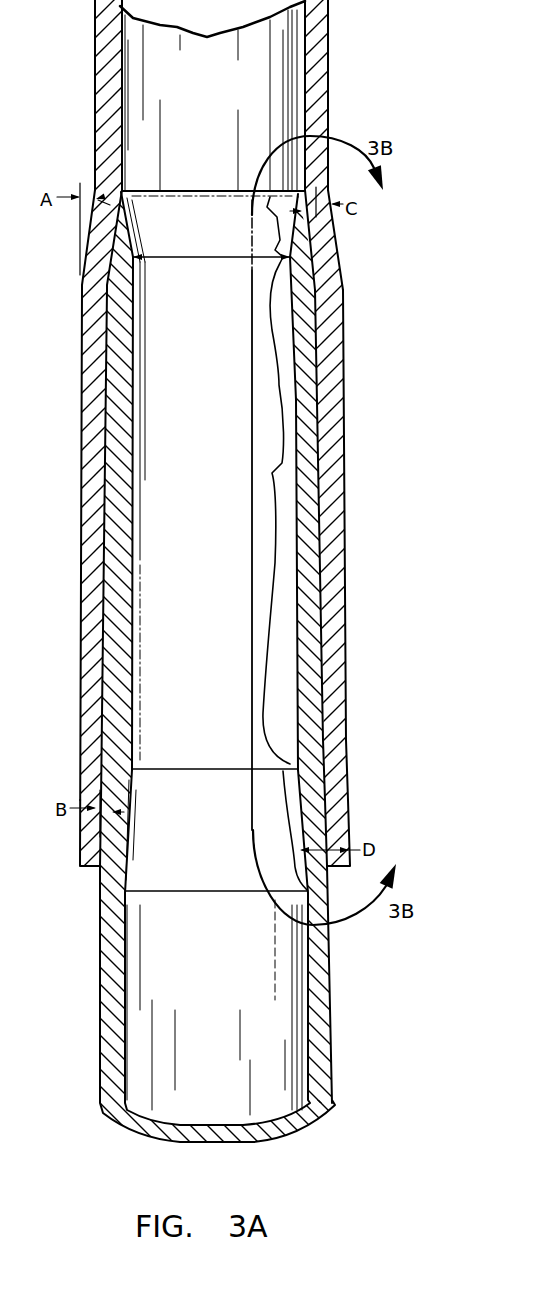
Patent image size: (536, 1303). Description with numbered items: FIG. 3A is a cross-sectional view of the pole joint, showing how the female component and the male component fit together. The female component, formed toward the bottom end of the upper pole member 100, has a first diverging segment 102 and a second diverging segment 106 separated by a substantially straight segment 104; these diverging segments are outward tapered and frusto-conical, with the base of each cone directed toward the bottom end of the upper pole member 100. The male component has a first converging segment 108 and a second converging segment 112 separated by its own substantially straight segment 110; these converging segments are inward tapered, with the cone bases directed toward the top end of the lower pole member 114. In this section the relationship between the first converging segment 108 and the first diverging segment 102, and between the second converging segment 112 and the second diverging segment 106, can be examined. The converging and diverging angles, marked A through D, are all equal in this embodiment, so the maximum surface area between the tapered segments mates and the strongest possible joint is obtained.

The upper pole member 100 is at (330, 61).
The first diverging segment 102 is at (353, 290).
The substantially straight segment 104 is at (353, 292).
The second diverging segment 106 is at (355, 803).
The first converging segment 108 is at (270, 230).
The substantially straight segment 110 is at (272, 473).
The second converging segment 112 is at (287, 831).
The inner tube 114 is at (333, 1002).